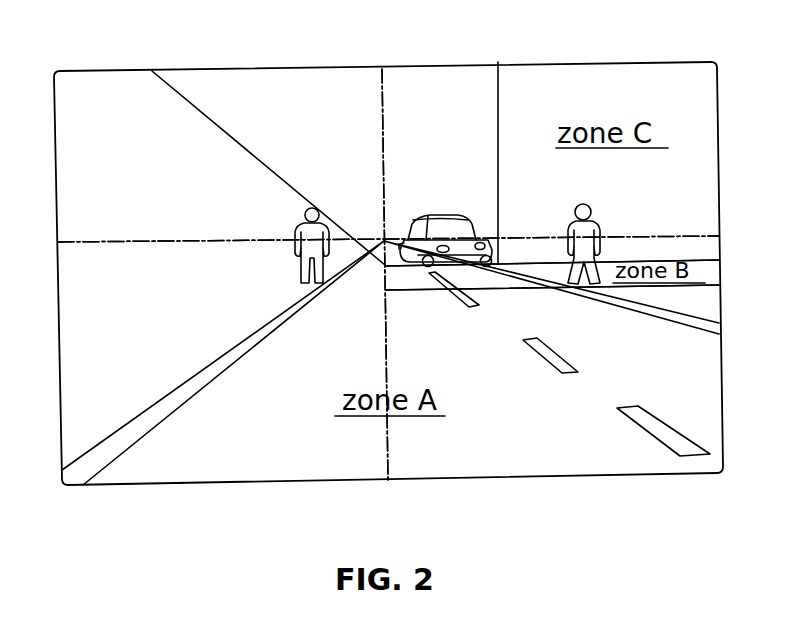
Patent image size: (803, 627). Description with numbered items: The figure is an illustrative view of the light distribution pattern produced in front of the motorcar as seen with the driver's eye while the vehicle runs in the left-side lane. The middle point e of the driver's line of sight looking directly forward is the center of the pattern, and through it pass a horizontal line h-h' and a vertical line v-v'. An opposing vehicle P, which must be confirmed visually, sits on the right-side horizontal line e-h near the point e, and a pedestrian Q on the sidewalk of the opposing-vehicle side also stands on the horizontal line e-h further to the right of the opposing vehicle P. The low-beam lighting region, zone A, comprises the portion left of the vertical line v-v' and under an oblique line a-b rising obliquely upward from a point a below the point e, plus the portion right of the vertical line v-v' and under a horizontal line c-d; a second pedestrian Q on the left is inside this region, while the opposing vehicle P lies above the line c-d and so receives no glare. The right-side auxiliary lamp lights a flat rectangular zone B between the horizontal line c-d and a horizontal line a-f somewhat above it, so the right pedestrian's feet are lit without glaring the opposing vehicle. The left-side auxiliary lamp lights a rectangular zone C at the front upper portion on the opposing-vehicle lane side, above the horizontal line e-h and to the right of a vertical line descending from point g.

The opposing vehicle P is at (448, 216).
The pedestrian Q is at (305, 213).
The end point of oblique line a- b is at (263, 151).
The upper end of vertical line v-v' v is at (379, 257).
The lower end of vertical line v- v' is at (393, 290).
The upper end of vertical line g-i g is at (496, 147).
The right end of horizontal line h-h' h is at (399, 236).
The left end of horizontal line h- h' is at (374, 239).
The middle point of line of sight e is at (390, 347).
The start point of oblique line a-b a is at (540, 269).
The left end of horizontal line c-d c is at (540, 291).
The right end of horizontal line a- f is at (560, 261).
The right end of horizontal line c- d is at (564, 287).